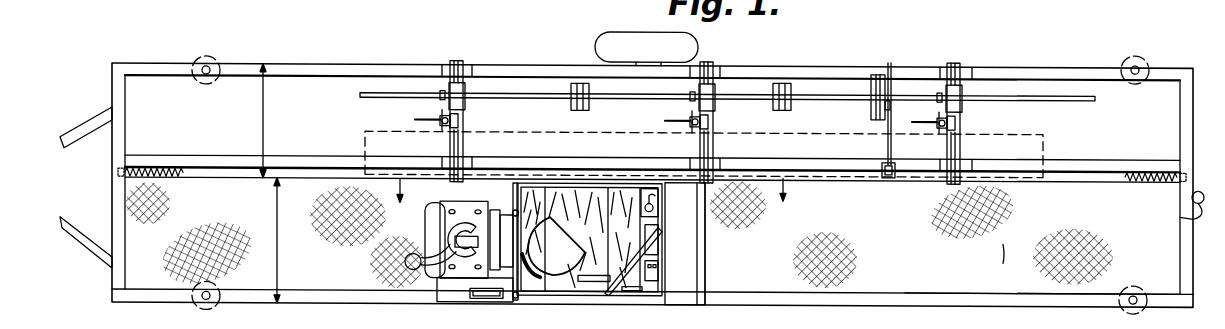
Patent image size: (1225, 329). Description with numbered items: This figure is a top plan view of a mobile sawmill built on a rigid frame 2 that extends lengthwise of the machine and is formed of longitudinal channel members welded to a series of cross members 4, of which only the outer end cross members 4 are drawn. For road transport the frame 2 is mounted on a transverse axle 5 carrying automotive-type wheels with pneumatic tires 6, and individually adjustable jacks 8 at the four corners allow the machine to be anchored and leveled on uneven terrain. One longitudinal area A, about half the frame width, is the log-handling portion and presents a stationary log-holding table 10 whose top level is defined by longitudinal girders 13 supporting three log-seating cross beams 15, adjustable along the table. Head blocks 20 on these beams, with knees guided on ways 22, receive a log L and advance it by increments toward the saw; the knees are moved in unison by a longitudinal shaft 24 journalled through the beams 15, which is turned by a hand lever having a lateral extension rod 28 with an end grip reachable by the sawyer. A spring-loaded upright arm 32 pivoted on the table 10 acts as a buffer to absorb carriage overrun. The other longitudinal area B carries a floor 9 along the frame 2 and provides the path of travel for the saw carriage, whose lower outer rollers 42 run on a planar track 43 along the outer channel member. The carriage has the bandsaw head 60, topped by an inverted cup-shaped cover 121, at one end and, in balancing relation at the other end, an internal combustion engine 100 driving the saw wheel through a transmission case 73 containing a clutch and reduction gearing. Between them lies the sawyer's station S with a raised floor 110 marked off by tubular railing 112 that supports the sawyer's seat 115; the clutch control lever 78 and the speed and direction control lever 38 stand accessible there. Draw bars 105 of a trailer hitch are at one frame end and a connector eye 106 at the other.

The rigid frame 2 is at (1061, 63).
The cross member 4 is at (112, 284).
The transverse axle 5 is at (655, 67).
The pneumatic tire 6 is at (596, 46).
The jack 8 is at (215, 63).
The floor 9 is at (1003, 259).
The log-holding table 10 is at (1090, 127).
The longitudinal girder 13 is at (299, 77).
The log-seating cross beam 15 is at (466, 61).
The head block 20 is at (471, 125).
The way 22 is at (452, 148).
The longitudinal shaft 24 is at (814, 98).
The lateral extension rod 28 is at (892, 185).
The upright arm 32 is at (134, 154).
The speed and direction control lever 38 is at (590, 300).
The lower outer roller 42 is at (481, 299).
The planar track 43 is at (922, 298).
The bandsaw head 60 is at (711, 256).
The transmission case 73 is at (504, 257).
The clutch control lever 78 is at (634, 290).
The internal combustion engine 100 is at (446, 211).
The draw bar 105 is at (79, 147).
The connector eye 106 is at (1180, 212).
The floor 110 is at (568, 188).
The tubular railing 112 is at (537, 288).
The seat 115 is at (552, 227).
The cover 121 is at (683, 236).
The log-handling portion A is at (256, 121).
The carriage travel area B is at (271, 240).
The log L is at (782, 126).
The sawyer's station S is at (600, 192).